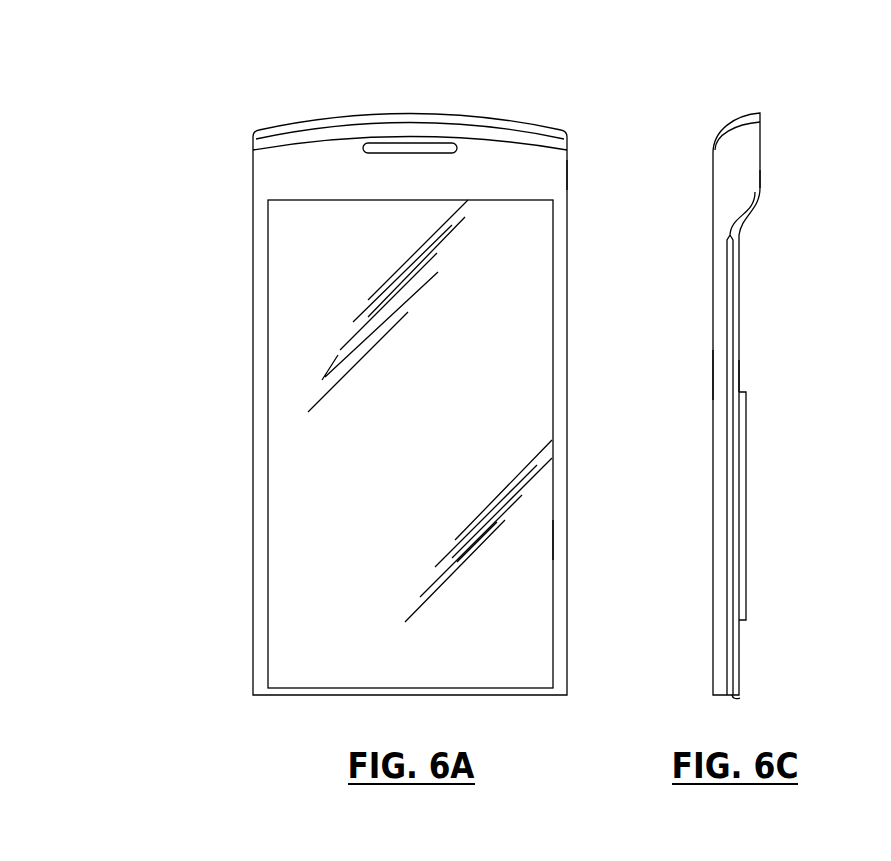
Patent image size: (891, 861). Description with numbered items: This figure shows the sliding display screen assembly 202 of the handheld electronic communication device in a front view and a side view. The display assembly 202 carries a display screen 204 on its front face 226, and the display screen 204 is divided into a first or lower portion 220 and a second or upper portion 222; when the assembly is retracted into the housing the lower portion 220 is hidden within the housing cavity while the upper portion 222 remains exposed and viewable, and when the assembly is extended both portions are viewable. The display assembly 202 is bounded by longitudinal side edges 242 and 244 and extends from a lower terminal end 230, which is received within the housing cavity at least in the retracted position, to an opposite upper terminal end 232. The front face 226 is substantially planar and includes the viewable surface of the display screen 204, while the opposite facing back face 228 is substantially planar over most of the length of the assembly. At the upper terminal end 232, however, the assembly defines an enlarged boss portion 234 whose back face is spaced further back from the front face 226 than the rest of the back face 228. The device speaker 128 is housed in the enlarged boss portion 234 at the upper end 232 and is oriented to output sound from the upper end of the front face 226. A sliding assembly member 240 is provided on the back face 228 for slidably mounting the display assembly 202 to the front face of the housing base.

In FIG. 6A, the sliding display screen assembly 202 is at (467, 75).
In FIG. 6C, the sliding display screen assembly 202 is at (741, 75).
In FIG. 6A, the device speaker 128 is at (410, 143).
In FIG. 6A, the longitudinal side edge 244 is at (252, 170).
In FIG. 6A, the longitudinal side edge 242 is at (567, 172).
In FIG. 6A, the display screen 204 is at (522, 328).
In FIG. 6A, the upper portion 222 is at (243, 198).
In FIG. 6A, the lower portion 220 is at (243, 447).
In FIG. 6A, the front face 226 is at (525, 538).
In FIG. 6C, the front face 226 is at (710, 372).
In FIG. 6C, the upper terminal end 232 is at (750, 148).
In FIG. 6C, the enlarged boss portion 234 is at (760, 180).
In FIG. 6C, the back face 228 is at (742, 378).
In FIG. 6C, the sliding assembly member 240 is at (746, 534).
In FIG. 6C, the lower terminal end 230 is at (740, 698).